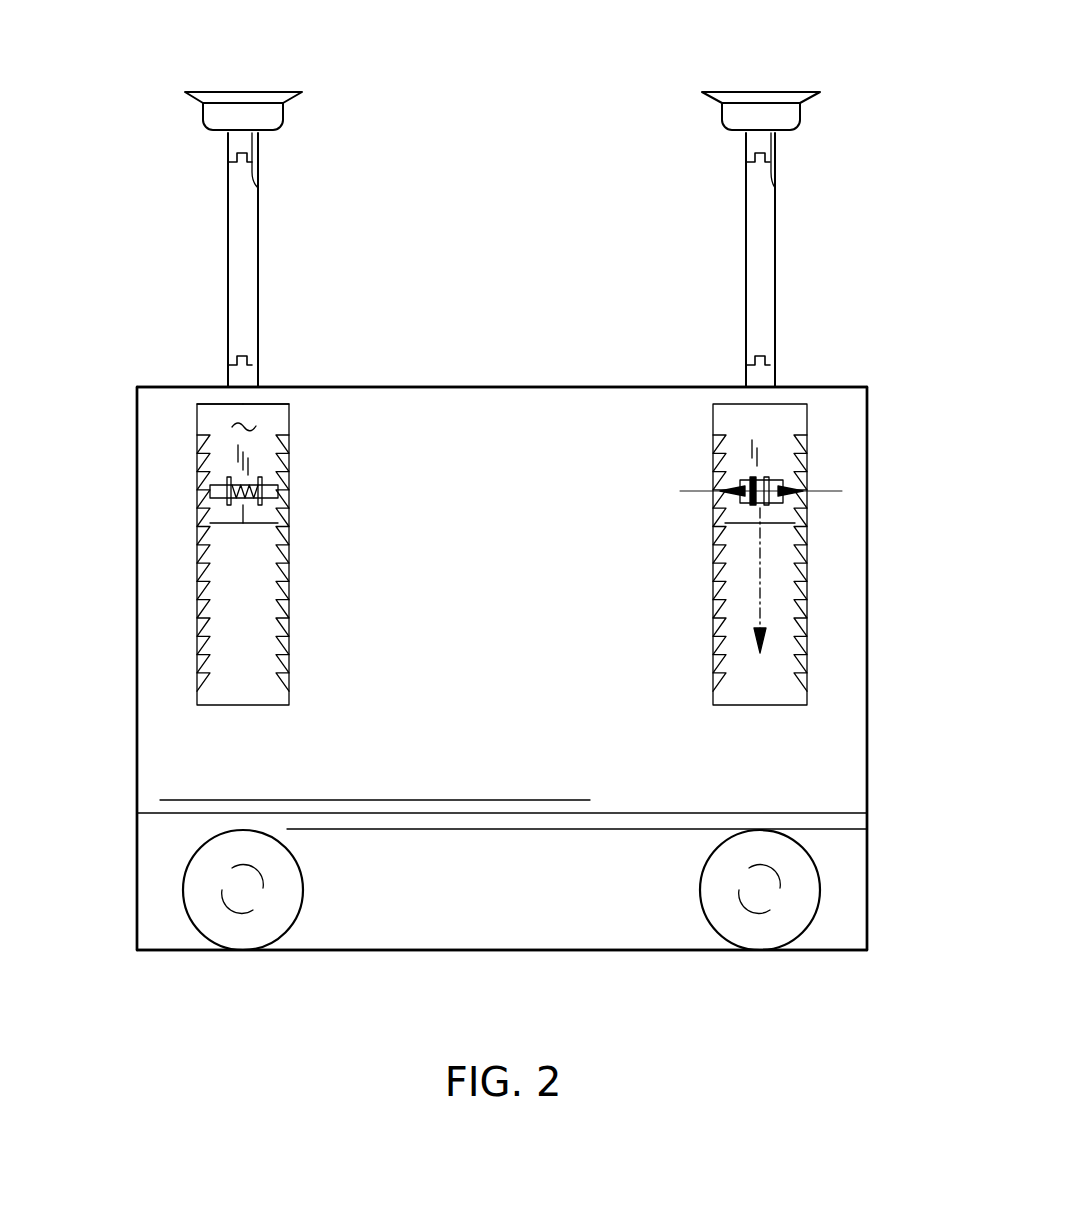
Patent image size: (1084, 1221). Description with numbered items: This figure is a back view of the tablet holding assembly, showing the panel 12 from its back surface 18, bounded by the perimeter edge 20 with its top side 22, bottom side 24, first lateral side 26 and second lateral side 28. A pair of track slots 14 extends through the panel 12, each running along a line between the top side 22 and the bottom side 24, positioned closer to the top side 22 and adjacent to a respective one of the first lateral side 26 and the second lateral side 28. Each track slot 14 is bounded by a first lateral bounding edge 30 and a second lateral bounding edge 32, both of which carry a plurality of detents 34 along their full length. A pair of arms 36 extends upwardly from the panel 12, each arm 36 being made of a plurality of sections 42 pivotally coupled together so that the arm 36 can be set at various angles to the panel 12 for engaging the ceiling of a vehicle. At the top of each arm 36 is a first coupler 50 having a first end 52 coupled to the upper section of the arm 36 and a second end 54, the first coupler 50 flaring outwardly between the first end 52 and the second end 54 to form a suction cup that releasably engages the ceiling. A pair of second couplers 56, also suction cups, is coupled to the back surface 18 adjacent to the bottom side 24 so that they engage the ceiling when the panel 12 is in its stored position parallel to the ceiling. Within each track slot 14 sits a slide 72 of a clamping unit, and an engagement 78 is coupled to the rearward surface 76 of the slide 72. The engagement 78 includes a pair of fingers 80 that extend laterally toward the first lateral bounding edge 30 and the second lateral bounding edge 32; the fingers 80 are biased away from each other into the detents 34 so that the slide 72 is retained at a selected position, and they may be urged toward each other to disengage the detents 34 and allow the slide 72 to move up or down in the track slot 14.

The panel 12 is at (137, 417).
The track slots 14 is at (234, 603).
The back surface 18 is at (513, 443).
The perimeter edge 20 is at (137, 725).
The top side 22 is at (440, 387).
The bottom side 24 is at (372, 951).
The first lateral side 26 is at (867, 750).
The second lateral side 28 is at (137, 806).
The first lateral bounding edge 30 is at (263, 485).
The second lateral bounding edge 32 is at (228, 490).
The detents 34 is at (716, 560).
The arms 36 is at (258, 268).
The sections 42 is at (228, 149).
The first couplers 50 is at (290, 127).
The first end 52 is at (257, 177).
The second end 54 is at (272, 92).
The second couplers 56 is at (265, 923).
The slide 72 is at (228, 525).
The rearward surface 76 is at (243, 423).
The engagement 78 is at (243, 515).
The fingers 80 is at (228, 493).